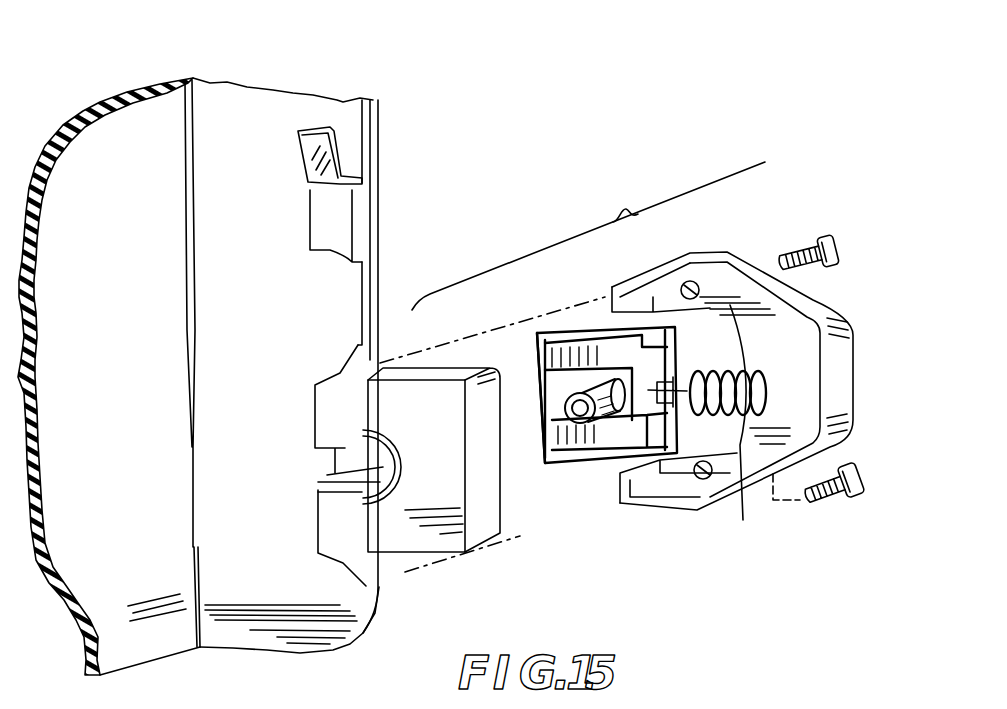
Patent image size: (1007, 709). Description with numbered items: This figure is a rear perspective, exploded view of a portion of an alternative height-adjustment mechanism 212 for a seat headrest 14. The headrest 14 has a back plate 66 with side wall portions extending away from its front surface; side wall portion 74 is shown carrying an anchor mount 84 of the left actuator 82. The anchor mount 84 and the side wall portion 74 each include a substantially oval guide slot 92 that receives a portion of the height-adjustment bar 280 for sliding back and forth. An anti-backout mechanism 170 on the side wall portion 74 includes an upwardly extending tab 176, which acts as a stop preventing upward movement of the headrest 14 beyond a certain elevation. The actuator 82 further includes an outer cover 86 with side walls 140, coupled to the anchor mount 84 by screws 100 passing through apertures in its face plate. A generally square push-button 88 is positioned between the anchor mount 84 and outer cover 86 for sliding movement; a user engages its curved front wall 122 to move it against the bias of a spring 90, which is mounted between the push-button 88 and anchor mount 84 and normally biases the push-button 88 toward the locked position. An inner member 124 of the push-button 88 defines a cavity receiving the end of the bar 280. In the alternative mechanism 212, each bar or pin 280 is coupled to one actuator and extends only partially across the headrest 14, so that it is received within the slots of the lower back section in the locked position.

The headrest 14 is at (68, 117).
The back plate 66 is at (121, 403).
The side wall portion 74 is at (238, 112).
The anti-backout mechanism 170 is at (345, 101).
The tab 176 is at (295, 149).
The guide slot 92 is at (350, 447).
The anchor mount 84 is at (455, 358).
The alternative height-adjustment mechanism 212 is at (672, 184).
The actuator 82 is at (616, 201).
The push-button 88 is at (585, 470).
The curved front wall 122 is at (540, 357).
The inner member 124 is at (597, 375).
The height-adjustment bar 280 is at (620, 424).
The spring 90 is at (727, 420).
The outer cover 86 is at (725, 241).
The side walls 140 is at (746, 276).
The screw 100 is at (802, 243).